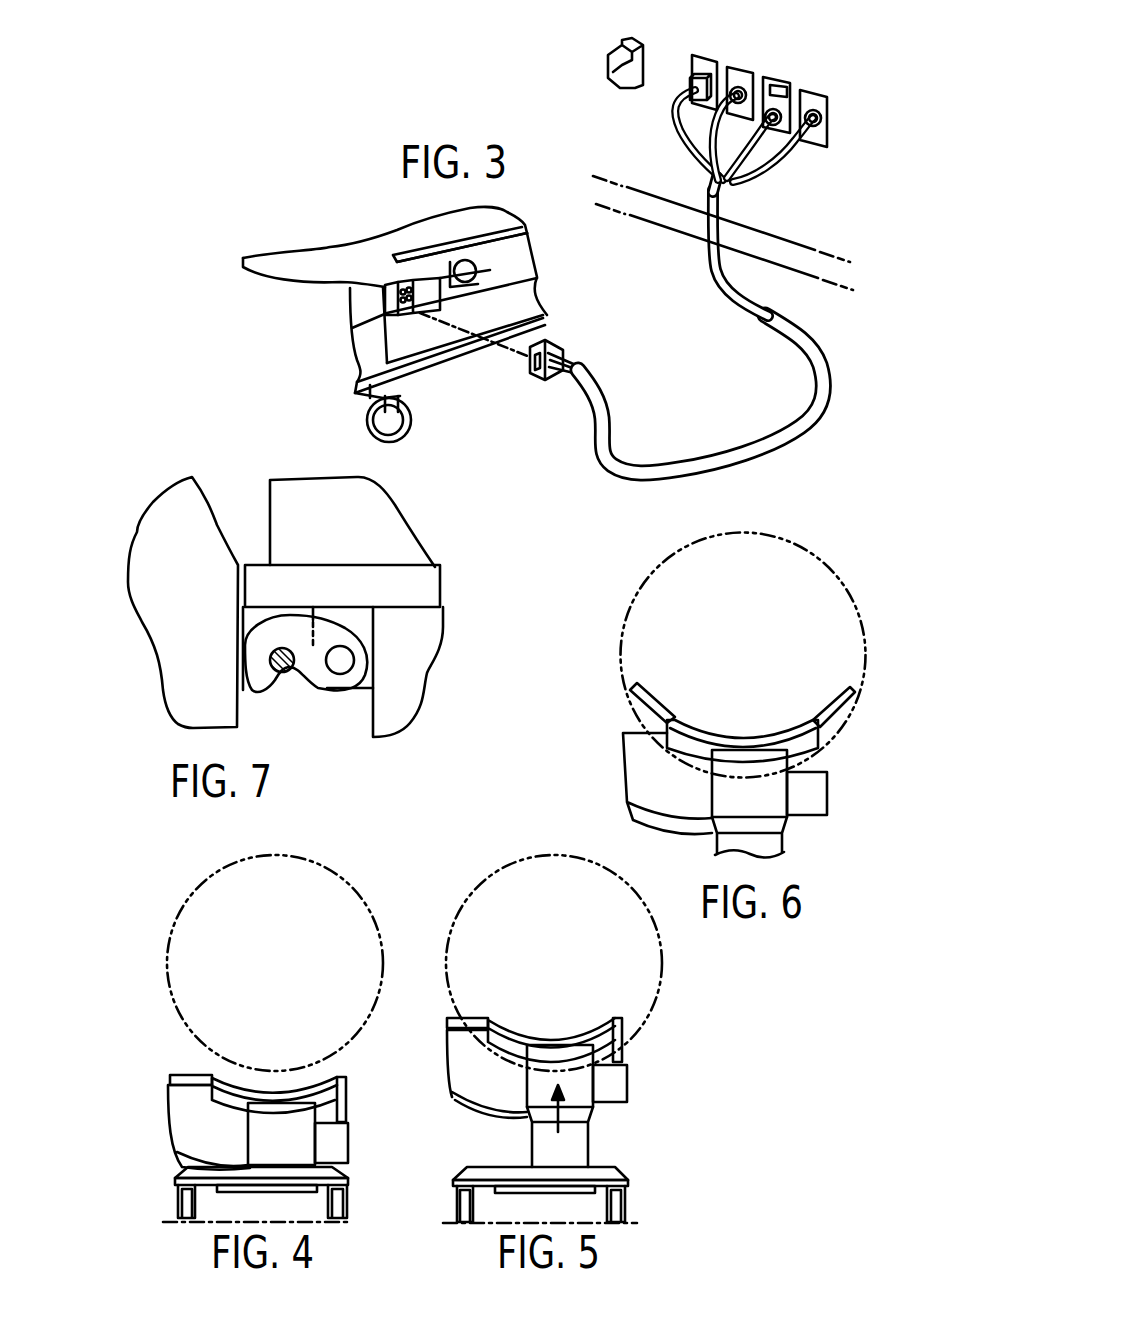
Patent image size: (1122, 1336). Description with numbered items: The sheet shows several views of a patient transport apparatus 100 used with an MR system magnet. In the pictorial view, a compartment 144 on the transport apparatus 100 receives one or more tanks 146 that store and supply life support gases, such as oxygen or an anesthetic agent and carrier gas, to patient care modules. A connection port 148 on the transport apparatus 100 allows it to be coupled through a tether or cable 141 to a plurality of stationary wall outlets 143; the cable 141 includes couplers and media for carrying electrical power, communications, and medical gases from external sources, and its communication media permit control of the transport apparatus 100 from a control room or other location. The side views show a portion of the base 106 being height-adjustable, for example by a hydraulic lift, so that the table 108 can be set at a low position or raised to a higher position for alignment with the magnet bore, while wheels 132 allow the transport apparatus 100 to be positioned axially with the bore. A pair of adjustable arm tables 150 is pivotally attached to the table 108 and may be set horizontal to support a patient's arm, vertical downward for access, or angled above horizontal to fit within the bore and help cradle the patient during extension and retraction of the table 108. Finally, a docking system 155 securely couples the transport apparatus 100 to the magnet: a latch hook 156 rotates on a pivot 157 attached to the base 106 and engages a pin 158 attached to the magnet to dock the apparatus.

In FIG. 3, the transport apparatus 100 is at (307, 149).
In FIG. 4, the transport apparatus 100 is at (104, 1148).
In FIG. 5, the transport apparatus 100 is at (687, 1150).
In FIG. 4, the base 106 is at (192, 1133).
In FIG. 5, the base 106 is at (590, 1130).
In FIG. 6, the table 108 is at (772, 727).
In FIG. 4, the table 108 is at (254, 1081).
In FIG. 5, the table 108 is at (577, 1028).
In FIG. 4, the wheels 132 is at (182, 1214).
In FIG. 5, the wheels 132 is at (623, 1220).
In FIG. 3, the cable 141 is at (780, 424).
In FIG. 3, the stationary wall outlets 143 is at (813, 88).
In FIG. 3, the compartment 144 is at (533, 298).
In FIG. 3, the tanks 146 is at (517, 245).
In FIG. 3, the connection port 148 is at (377, 317).
In FIG. 6, the arm tables 150 is at (645, 690).
In FIG. 4, the arm tables 150 is at (168, 1080).
In FIG. 5, the arm tables 150 is at (449, 1019).
In FIG. 7, the docking system 155 is at (148, 681).
In FIG. 7, the latch hook 156 is at (320, 627).
In FIG. 7, the pivot 157 is at (340, 668).
In FIG. 7, the pin 158 is at (295, 668).